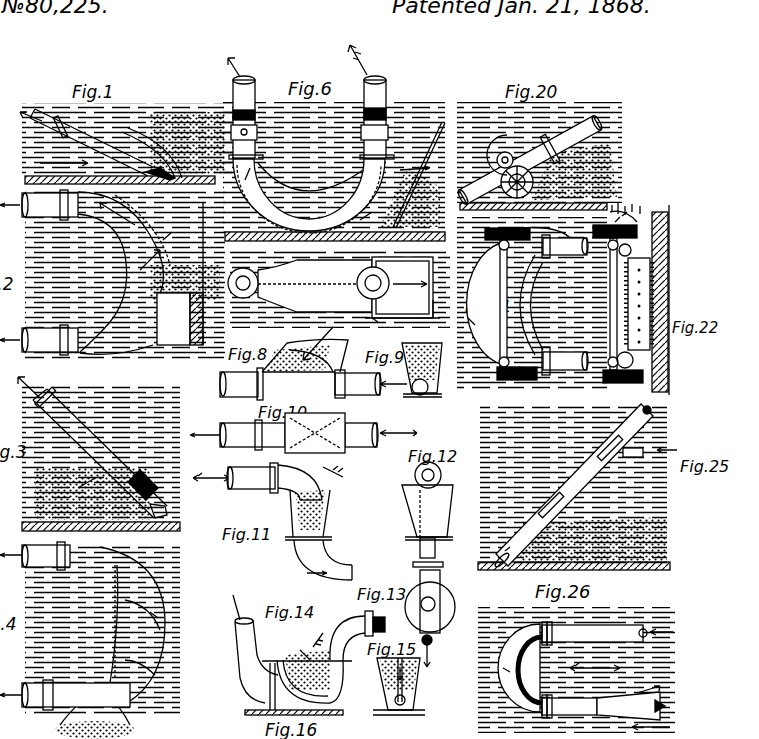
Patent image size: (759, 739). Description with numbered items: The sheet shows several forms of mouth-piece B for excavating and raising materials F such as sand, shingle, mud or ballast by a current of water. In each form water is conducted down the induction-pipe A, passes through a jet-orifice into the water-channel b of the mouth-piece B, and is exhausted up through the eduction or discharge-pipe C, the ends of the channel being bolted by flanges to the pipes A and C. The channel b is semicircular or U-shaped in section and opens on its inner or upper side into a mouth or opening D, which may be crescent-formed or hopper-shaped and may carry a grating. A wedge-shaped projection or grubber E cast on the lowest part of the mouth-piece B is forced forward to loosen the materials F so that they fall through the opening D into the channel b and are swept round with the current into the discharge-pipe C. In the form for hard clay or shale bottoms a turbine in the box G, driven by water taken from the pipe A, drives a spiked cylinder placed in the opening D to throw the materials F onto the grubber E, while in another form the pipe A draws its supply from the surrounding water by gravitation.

In FIG. 2, the induction-pipe A is at (50, 340).
In FIG. 4, the induction-pipe A is at (76, 689).
In FIG. 6, the induction-pipe A is at (377, 117).
In FIG. 8, the induction-pipe A is at (358, 384).
In FIG. 10, the induction-pipe A is at (361, 435).
In FIG. 11, the induction-pipe A is at (252, 478).
In FIG. 13, the induction-pipe A is at (430, 601).
In FIG. 21, the induction-pipe A is at (565, 246).
In FIG. 25, the induction-pipe A is at (620, 450).
In FIG. 26, the induction-pipe A is at (603, 706).
In FIG. 1, the mouth-piece B is at (137, 153).
In FIG. 2, the mouth-piece B is at (124, 271).
In FIG. 3, the mouth-piece B is at (100, 452).
In FIG. 4, the mouth-piece B is at (132, 625).
In FIG. 6, the mouth-piece B is at (309, 196).
In FIG. 7, the mouth-piece B is at (402, 327).
In FIG. 8, the mouth-piece B is at (305, 355).
In FIG. 9, the mouth-piece B is at (427, 370).
In FIG. 11, the mouth-piece B is at (300, 515).
In FIG. 12, the mouth-piece B is at (432, 506).
In FIG. 14, the mouth-piece B is at (289, 660).
In FIG. 15, the mouth-piece B is at (399, 686).
In FIG. 21, the mouth-piece B is at (493, 303).
In FIG. 25, the mouth-piece B is at (573, 486).
In FIG. 26, the mouth-piece B is at (519, 670).
In FIG. 1, the eduction or discharge-pipe C is at (91, 142).
In FIG. 2, the eduction or discharge-pipe C is at (50, 205).
In FIG. 4, the eduction or discharge-pipe C is at (46, 556).
In FIG. 6, the eduction or discharge-pipe C is at (246, 117).
In FIG. 7, the eduction or discharge-pipe C is at (243, 283).
In FIG. 8, the eduction or discharge-pipe C is at (241, 384).
In FIG. 10, the eduction or discharge-pipe C is at (252, 435).
In FIG. 11, the eduction or discharge-pipe C is at (323, 560).
In FIG. 12, the eduction or discharge-pipe C is at (428, 552).
In FIG. 14, the eduction or discharge-pipe C is at (312, 652).
In FIG. 20, the eduction or discharge-pipe C is at (529, 160).
In FIG. 21, the eduction or discharge-pipe C is at (565, 361).
In FIG. 26, the eduction or discharge-pipe C is at (594, 633).
In FIG. 4, the mouth or opening D is at (140, 637).
In FIG. 6, the mouth or opening D is at (366, 222).
In FIG. 7, the mouth or opening D is at (373, 283).
In FIG. 8, the mouth or opening D is at (313, 359).
In FIG. 10, the mouth or opening D is at (315, 433).
In FIG. 11, the mouth or opening D is at (325, 491).
In FIG. 12, the mouth or opening D is at (425, 499).
In FIG. 13, the mouth or opening D is at (430, 624).
In FIG. 14, the mouth or opening D is at (375, 623).
In FIG. 15, the mouth or opening D is at (411, 681).
In FIG. 22, the mouth or opening D is at (667, 302).
In FIG. 2, the wedge-shaped projection E is at (180, 319).
In FIG. 21, the wedge-shaped projection E is at (531, 324).
In FIG. 22, the wedge-shaped projection E is at (634, 318).
In FIG. 26, the wedge-shaped projection E is at (530, 670).
In FIG. 2, the materials F is at (171, 238).
In FIG. 3, the materials F is at (86, 483).
In FIG. 7, the materials F is at (439, 312).
In FIG. 11, the materials F is at (303, 482).
In FIG. 14, the materials F is at (312, 648).
In FIG. 20, the box G is at (510, 166).
In FIG. 21, the box G is at (511, 309).
In FIG. 22, the box G is at (618, 309).
In FIG. 4, the water-channel b is at (154, 613).
In FIG. 6, the water-channel b is at (245, 173).
In FIG. 9, the water-channel b is at (420, 386).
In FIG. 21, the water-channel b is at (469, 326).
In FIG. 25, the water-channel b is at (505, 551).
In FIG. 26, the water-channel b is at (504, 671).